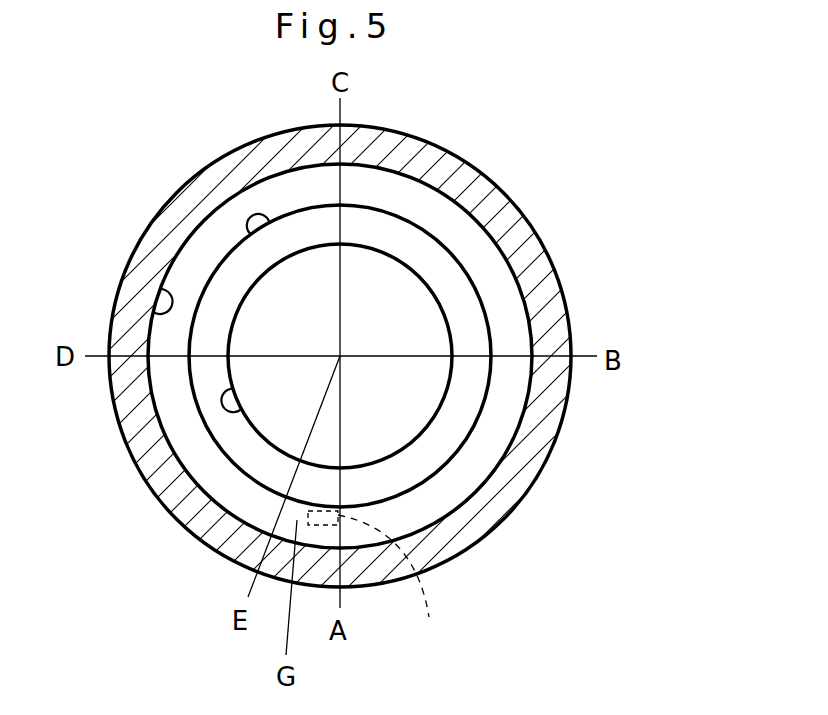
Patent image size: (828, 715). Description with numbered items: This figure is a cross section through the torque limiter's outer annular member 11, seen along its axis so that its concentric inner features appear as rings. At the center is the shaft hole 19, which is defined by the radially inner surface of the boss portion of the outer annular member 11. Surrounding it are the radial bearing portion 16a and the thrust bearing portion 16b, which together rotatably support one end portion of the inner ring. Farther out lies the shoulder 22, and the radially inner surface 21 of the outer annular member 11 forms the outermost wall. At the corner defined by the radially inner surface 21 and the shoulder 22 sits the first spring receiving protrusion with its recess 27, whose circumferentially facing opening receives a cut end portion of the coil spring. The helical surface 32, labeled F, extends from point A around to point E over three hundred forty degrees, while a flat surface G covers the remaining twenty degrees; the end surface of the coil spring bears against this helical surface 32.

The outer annular member 11 is at (375, 147).
The radial bearing portion 16a is at (255, 235).
The thrust bearing portion 16b is at (222, 292).
The shaft hole 19 is at (240, 412).
The radially inner surface 21 is at (155, 313).
The shoulder 22 is at (232, 485).
The recess 27 is at (381, 580).
The helical surface 32 is at (447, 228).